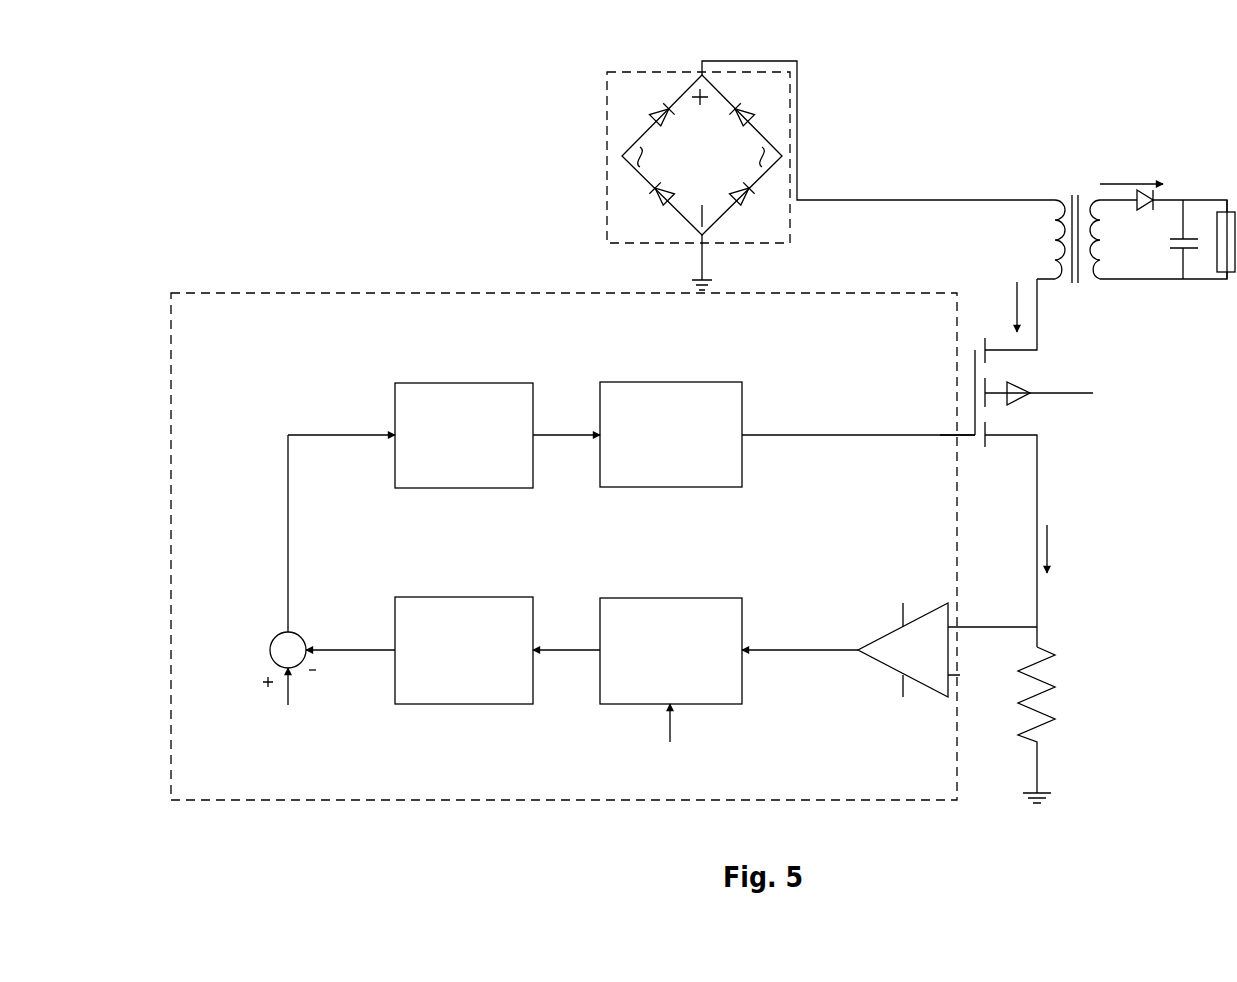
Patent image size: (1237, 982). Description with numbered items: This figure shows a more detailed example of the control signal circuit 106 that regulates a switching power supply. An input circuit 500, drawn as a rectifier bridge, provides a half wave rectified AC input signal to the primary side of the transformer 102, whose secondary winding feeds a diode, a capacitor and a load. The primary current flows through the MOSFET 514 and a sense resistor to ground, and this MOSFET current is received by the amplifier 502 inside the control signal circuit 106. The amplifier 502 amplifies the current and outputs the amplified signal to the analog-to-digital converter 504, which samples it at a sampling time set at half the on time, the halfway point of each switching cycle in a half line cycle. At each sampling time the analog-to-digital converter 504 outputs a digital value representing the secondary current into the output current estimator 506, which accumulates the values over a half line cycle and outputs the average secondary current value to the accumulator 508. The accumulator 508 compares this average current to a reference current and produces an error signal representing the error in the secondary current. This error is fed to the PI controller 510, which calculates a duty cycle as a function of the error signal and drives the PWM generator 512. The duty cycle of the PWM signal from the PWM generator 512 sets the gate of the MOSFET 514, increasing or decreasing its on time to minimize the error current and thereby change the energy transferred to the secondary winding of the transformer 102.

The transformer 102 is at (1093, 305).
The control signal circuit 106 is at (568, 293).
The input circuit 500 is at (607, 152).
The amplifier 502 is at (938, 661).
The analog-to-digital converter 504 is at (672, 598).
The output current estimator 506 is at (466, 597).
The accumulator 508 is at (270, 650).
The proportional-integral controller 510 is at (466, 383).
The pulse width modulation generator 512 is at (672, 382).
The MOSFET 514 is at (1070, 378).